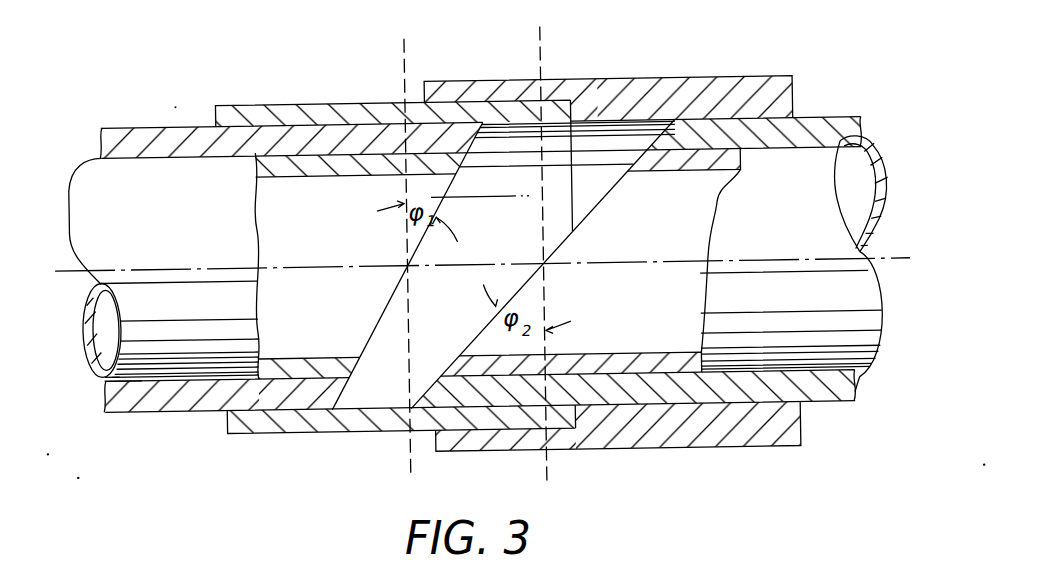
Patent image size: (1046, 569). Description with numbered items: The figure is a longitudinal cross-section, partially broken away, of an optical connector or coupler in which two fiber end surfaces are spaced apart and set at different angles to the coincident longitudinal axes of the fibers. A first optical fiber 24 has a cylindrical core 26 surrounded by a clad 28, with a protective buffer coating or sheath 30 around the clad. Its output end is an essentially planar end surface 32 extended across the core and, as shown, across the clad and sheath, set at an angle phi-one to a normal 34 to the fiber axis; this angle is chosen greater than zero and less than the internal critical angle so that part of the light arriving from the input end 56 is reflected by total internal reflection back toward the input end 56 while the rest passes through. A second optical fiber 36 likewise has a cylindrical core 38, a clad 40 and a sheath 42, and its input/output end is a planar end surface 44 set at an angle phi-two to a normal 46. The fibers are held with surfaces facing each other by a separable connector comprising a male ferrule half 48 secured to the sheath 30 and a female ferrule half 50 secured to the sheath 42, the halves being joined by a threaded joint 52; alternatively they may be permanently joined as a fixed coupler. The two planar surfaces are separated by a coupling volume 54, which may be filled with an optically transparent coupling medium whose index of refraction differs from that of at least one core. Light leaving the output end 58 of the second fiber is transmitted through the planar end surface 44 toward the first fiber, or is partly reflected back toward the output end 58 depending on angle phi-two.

The first optical fiber 24 is at (173, 337).
The cylindrical core 26 is at (70, 349).
The clad 28 is at (101, 379).
The protective buffer coating or sheath 30 is at (146, 127).
The planar end surface 32 is at (371, 340).
The normal 34 is at (408, 45).
The second optical fiber 36 is at (833, 404).
The cylindrical core 38 is at (873, 196).
The clad 40 is at (877, 167).
The protective buffer coating or sheath 42 is at (833, 124).
The planar end surface 44 is at (613, 178).
The normal 46 is at (544, 33).
The male ferrule half 48 is at (320, 102).
The female ferrule half 50 is at (700, 420).
The threaded joint 52 is at (508, 432).
The coupling volume 54 is at (515, 244).
The input end 56 is at (75, 247).
The output end 58 is at (873, 290).